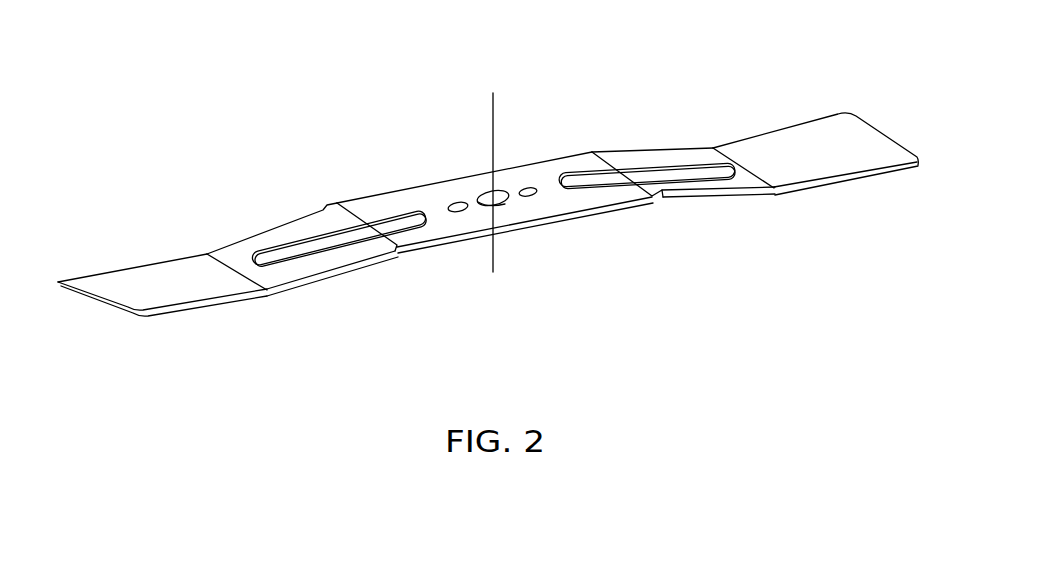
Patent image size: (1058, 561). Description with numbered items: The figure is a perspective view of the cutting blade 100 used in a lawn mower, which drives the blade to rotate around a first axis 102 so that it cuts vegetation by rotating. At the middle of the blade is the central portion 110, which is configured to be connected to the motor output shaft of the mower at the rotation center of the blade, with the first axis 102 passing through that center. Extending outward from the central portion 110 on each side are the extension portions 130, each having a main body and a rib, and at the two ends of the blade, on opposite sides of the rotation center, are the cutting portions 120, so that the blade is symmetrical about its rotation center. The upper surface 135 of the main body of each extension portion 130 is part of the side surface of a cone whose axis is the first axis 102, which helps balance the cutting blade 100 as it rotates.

The cutting blade 100 is at (543, 124).
The first axis 102 is at (493, 142).
The central portion 110 is at (533, 210).
The cutting portion 120 is at (802, 145).
The extension portion 130 is at (657, 152).
The upper surface 135 is at (327, 260).